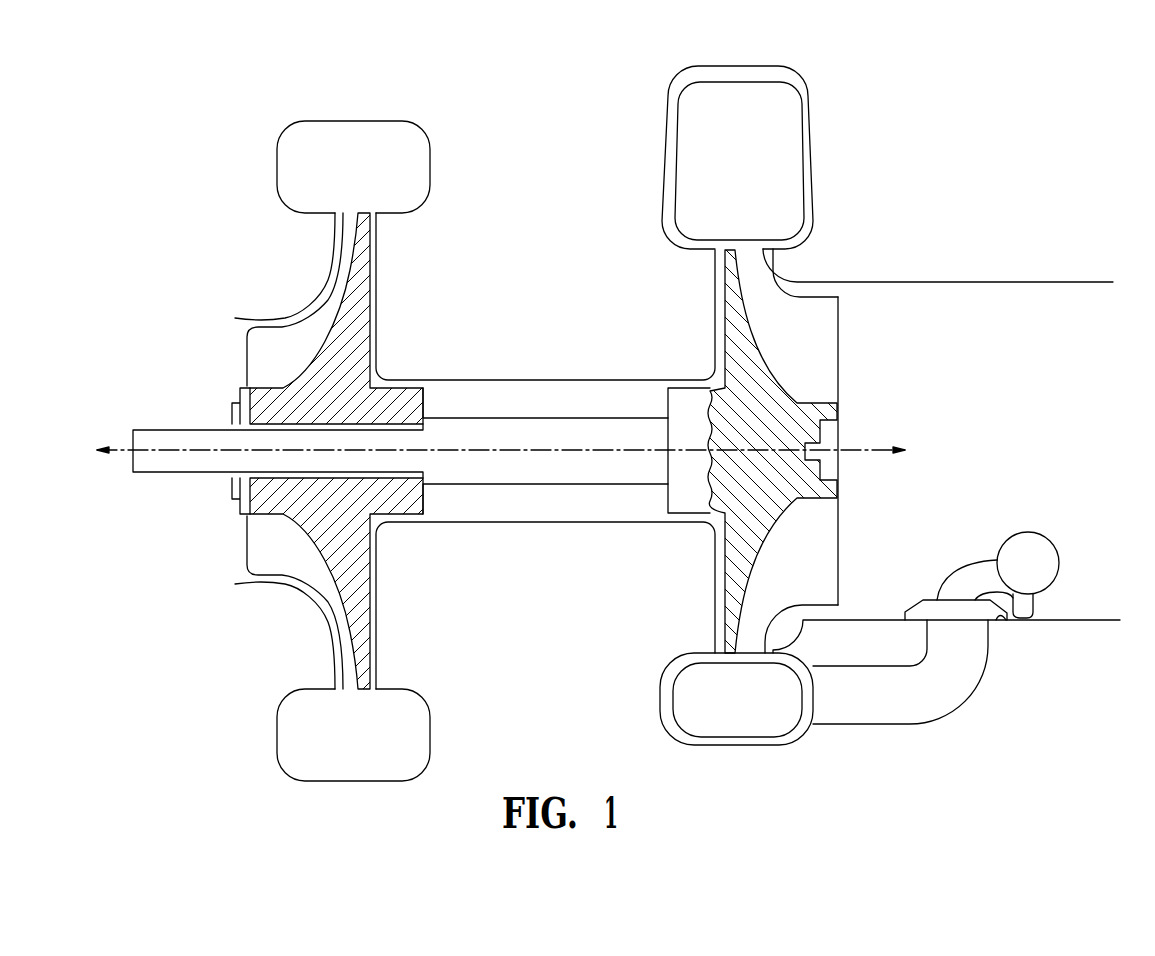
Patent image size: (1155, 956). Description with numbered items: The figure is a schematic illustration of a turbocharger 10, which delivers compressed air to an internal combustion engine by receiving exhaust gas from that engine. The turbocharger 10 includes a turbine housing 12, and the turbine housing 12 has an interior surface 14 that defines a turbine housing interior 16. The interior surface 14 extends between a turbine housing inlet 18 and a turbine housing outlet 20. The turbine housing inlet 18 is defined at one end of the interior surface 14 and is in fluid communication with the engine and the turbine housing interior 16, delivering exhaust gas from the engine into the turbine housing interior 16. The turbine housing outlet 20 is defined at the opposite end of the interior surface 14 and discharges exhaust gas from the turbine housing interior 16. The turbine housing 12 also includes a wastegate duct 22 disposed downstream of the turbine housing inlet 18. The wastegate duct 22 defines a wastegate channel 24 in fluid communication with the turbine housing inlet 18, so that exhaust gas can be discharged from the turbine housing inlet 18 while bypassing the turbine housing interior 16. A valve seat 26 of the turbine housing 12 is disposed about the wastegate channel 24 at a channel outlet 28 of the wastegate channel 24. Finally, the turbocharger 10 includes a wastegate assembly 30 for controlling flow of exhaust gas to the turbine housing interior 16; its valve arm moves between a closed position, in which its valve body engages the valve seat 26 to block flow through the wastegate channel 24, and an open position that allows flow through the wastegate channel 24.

The turbocharger 10 is at (968, 153).
The turbine housing 12 is at (990, 282).
The interior surface 14 is at (1040, 280).
The turbine housing interior 16 is at (1050, 425).
The turbine housing inlet 18 is at (678, 155).
The turbine housing outlet 20 is at (1093, 620).
The wastegate duct 22 is at (935, 723).
The wastegate channel 24 is at (887, 695).
The valve seat 26 is at (998, 622).
The channel outlet 28 is at (957, 621).
The wastegate assembly 30 is at (937, 553).